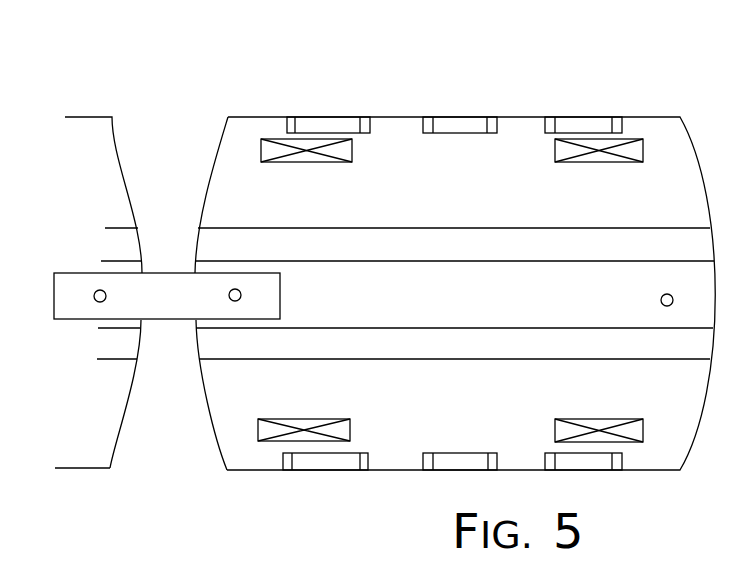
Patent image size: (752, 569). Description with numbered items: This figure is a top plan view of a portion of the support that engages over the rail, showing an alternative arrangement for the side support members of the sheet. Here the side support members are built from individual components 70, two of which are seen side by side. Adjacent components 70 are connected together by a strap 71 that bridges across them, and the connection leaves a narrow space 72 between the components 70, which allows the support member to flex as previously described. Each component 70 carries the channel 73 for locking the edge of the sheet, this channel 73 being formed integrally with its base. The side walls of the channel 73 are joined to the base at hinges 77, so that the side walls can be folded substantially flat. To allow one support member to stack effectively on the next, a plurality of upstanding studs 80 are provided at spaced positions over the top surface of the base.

The individual component 70 is at (455, 242).
The strap 71 is at (160, 283).
The narrow space 72 is at (168, 343).
The channel 73 is at (443, 238).
The hinge 77 is at (462, 117).
The upstanding stud 80 is at (325, 162).